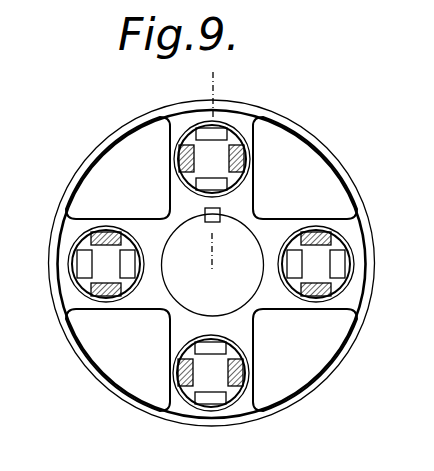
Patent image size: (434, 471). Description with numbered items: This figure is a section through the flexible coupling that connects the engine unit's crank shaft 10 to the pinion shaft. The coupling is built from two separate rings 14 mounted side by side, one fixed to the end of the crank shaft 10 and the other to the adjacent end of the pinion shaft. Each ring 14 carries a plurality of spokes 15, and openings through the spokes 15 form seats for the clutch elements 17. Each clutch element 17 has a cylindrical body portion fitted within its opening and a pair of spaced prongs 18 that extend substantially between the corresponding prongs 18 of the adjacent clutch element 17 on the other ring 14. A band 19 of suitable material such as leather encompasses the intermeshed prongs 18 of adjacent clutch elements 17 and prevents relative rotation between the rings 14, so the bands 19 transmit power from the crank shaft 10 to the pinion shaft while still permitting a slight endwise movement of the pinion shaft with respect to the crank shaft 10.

The crank shaft 10 is at (227, 272).
The ring 14 is at (304, 132).
The spoke 15 is at (79, 222).
The clutch element 17 is at (218, 150).
The prong 18 is at (209, 131).
The band 19 is at (177, 140).